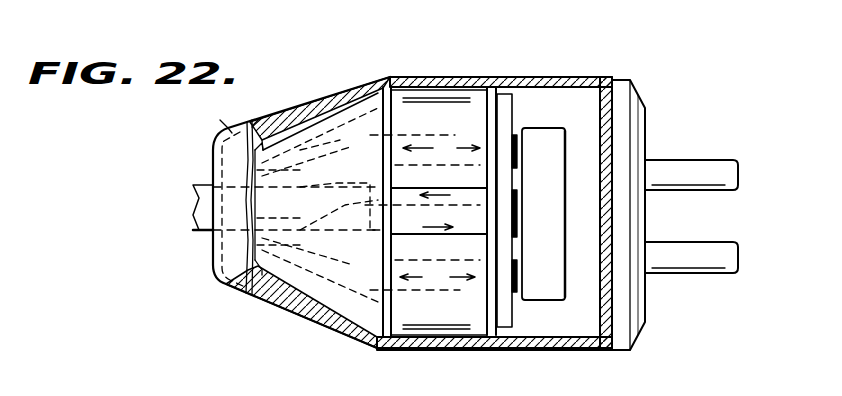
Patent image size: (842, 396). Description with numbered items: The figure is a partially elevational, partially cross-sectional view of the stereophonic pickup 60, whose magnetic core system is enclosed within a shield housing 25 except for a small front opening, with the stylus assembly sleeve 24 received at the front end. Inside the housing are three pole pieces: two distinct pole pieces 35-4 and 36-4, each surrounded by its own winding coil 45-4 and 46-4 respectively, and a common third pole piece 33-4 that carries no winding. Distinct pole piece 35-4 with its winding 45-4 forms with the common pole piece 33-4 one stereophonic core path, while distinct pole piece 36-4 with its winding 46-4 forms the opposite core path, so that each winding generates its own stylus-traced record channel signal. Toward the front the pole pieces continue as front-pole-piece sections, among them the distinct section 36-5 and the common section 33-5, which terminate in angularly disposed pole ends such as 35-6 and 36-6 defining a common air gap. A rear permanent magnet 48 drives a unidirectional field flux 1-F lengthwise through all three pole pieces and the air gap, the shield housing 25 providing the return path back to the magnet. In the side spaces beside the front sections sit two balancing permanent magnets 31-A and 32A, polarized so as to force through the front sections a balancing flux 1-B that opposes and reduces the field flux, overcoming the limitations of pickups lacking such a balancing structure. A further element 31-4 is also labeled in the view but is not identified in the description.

The shield housing 25 is at (228, 128).
The stylus assembly sleeve 24 is at (196, 208).
The pole end 35-6 is at (267, 177).
The pole end 36-6 is at (267, 238).
The permanent balancing magnet 32A is at (267, 288).
The distinct front-pole-piece section 36-5 is at (313, 255).
The common front-pole-piece section 33-5 is at (307, 170).
The permanent balancing magnet 31-A is at (323, 112).
The distinct pole piece 35-4 is at (452, 63).
The partition 31-4 is at (376, 88).
The pickup 60 is at (437, 179).
The winding coil 45-4 is at (467, 97).
The winding coil 46-4 is at (470, 322).
The common third core pole piece 33-4 is at (472, 236).
The distinct pole piece 36-4 is at (420, 335).
The rear permanent magnet 48 is at (548, 130).
The field flux 1-F is at (415, 144).
The balancing flux 1-B is at (460, 144).